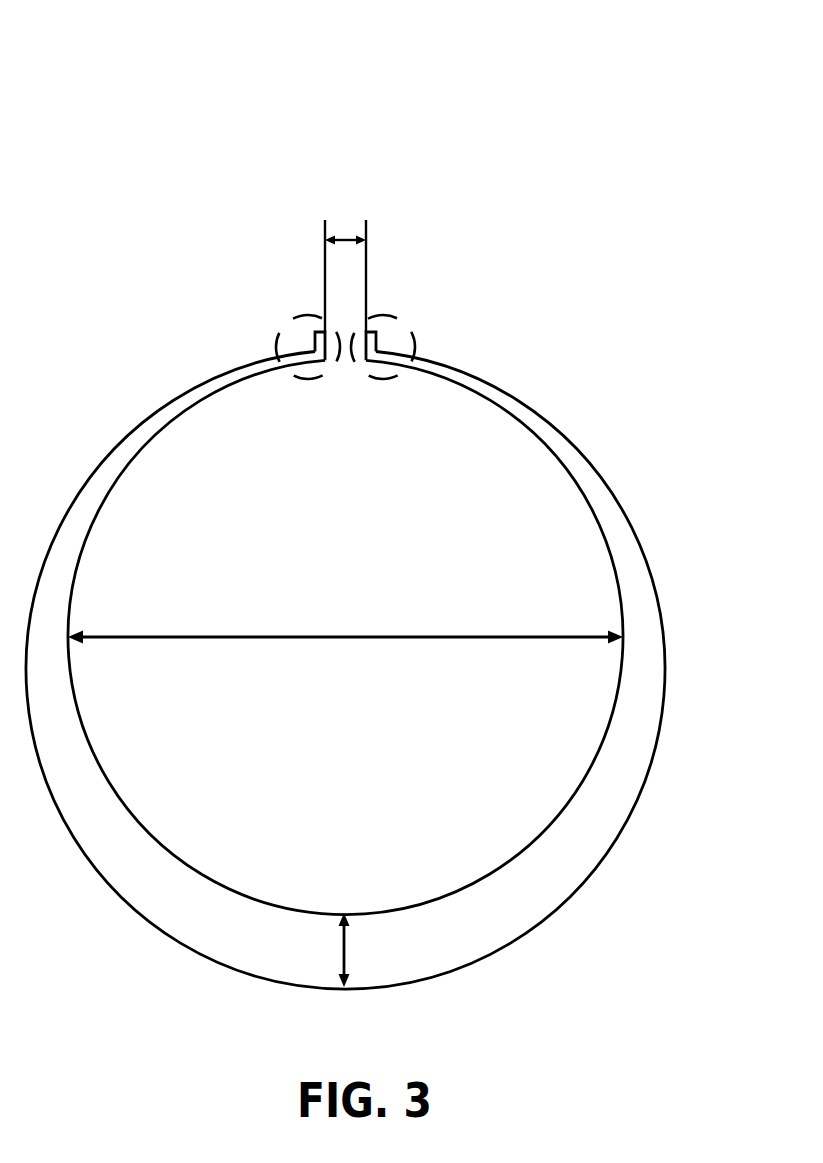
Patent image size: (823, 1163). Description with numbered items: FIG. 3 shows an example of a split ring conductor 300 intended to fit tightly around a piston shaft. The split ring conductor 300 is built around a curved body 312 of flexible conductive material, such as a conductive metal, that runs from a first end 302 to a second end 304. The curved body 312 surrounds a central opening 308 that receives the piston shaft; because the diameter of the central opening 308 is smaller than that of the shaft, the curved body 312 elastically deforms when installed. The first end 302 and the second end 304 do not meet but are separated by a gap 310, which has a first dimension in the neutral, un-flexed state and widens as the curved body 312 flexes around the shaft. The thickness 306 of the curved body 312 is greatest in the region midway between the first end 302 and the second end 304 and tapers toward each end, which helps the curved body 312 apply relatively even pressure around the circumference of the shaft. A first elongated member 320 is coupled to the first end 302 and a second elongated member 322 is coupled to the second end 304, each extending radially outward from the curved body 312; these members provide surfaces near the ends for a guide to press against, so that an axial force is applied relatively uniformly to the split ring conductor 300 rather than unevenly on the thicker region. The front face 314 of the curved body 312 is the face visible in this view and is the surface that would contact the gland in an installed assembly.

The split ring conductor 300 is at (617, 46).
The first end 302 is at (277, 341).
The second end 304 is at (412, 357).
The thickness 306 is at (343, 953).
The central opening 308 is at (347, 636).
The gap 310 is at (345, 233).
The curved body 312 is at (532, 411).
The front face 314 is at (570, 840).
The first elongated member 320 is at (317, 332).
The second elongated member 322 is at (373, 328).